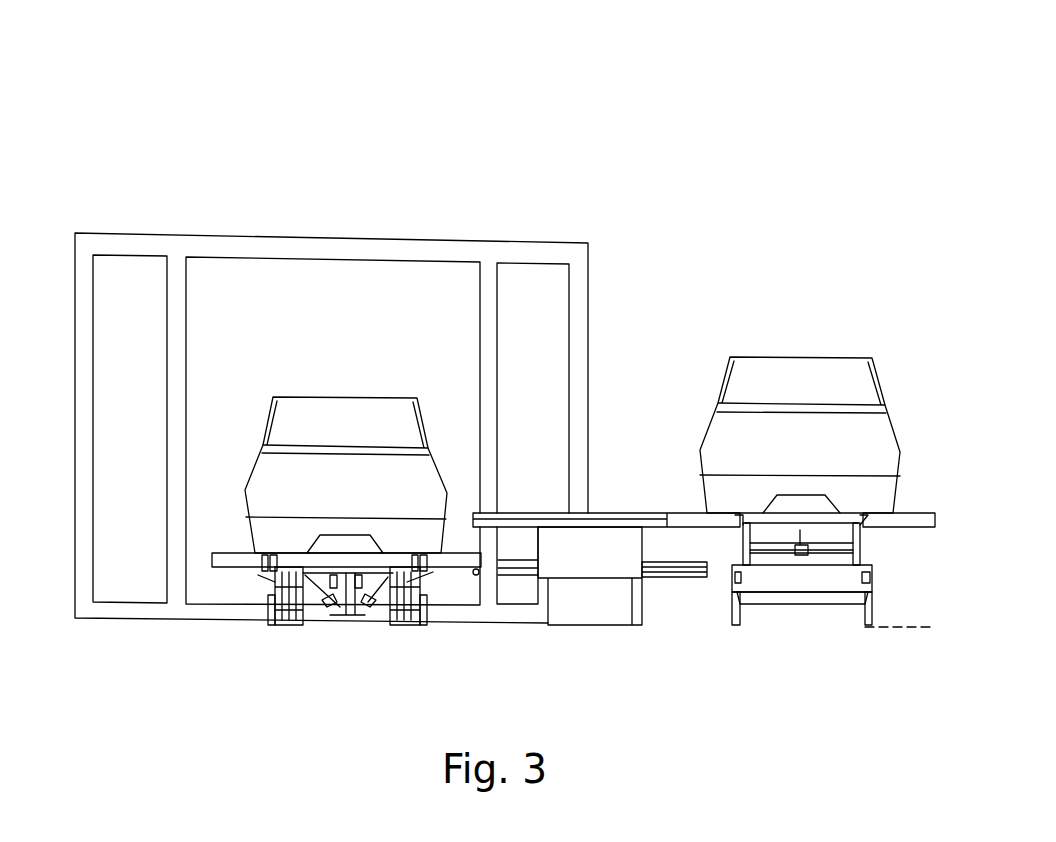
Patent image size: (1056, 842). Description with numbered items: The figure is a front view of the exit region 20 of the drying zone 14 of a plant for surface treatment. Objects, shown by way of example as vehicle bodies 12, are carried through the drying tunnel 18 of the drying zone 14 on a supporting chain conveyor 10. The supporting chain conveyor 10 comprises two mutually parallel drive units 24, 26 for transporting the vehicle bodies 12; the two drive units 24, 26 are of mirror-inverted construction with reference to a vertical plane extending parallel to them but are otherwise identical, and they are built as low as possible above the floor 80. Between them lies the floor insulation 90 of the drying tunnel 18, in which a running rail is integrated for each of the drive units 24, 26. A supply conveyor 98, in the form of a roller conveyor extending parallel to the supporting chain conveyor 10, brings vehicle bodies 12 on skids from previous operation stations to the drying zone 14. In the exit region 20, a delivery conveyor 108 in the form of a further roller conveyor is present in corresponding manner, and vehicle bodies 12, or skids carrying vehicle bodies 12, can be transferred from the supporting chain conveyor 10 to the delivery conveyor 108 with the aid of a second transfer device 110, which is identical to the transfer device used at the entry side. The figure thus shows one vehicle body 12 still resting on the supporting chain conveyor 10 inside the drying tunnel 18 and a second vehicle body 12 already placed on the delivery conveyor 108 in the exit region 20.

The supporting chain conveyor 10 is at (260, 615).
The vehicle bodies 12 is at (334, 420).
The drying zone 14 is at (509, 130).
The drying tunnel 18 is at (343, 230).
The exit region 20 is at (942, 265).
The drive unit 24 is at (297, 630).
The drive unit 26 is at (407, 630).
The floor 80 is at (934, 617).
The floor insulation 90 is at (372, 615).
The supply conveyor 98 is at (678, 586).
The delivery conveyor 108 is at (874, 579).
The second transfer device 110 is at (590, 572).